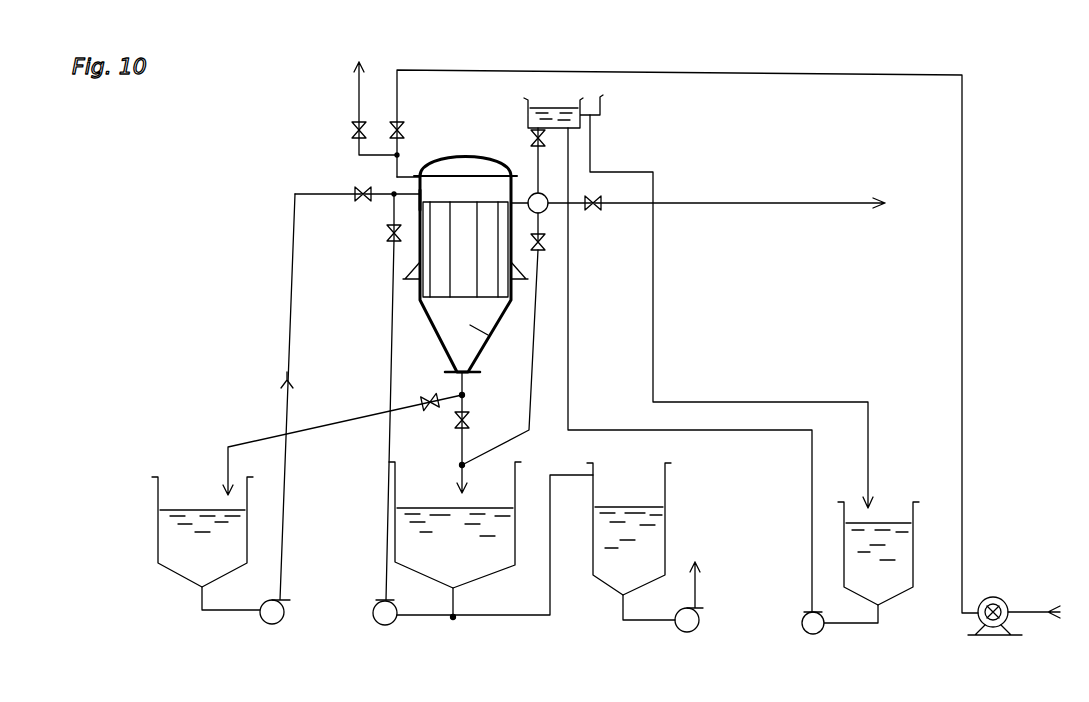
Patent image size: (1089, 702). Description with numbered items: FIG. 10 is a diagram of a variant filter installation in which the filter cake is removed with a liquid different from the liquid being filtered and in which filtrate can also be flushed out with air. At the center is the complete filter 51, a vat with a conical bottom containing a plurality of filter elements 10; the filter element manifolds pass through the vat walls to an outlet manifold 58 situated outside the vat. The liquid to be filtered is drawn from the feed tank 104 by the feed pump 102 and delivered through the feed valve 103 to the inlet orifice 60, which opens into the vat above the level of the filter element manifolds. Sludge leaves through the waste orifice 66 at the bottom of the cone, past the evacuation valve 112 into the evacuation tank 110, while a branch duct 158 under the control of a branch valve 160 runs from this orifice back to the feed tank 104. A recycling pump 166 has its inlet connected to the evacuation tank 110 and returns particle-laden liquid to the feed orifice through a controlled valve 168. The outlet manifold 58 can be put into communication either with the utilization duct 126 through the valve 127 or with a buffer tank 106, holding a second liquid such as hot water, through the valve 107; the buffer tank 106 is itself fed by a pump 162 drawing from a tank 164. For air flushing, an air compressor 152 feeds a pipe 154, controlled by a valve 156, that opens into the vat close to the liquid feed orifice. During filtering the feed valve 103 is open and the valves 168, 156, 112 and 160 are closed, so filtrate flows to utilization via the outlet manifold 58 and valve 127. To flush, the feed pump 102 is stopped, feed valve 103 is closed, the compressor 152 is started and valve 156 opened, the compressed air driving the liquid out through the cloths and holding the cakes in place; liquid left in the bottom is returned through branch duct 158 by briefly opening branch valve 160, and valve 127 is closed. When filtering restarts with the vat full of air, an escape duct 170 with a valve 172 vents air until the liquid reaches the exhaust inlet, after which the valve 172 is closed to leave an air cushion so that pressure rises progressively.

The filter element 10 is at (440, 288).
The complete filter 51 is at (470, 325).
The outlet manifold 58 is at (542, 196).
The inlet orifice 60 is at (420, 202).
The waste orifice 66 is at (452, 371).
The feed pump 102 is at (278, 624).
The feed valve 103 is at (360, 190).
The feed tank 104 is at (178, 538).
The buffer tank 106 is at (527, 104).
The valve 107 is at (530, 138).
The evacuation tank 110 is at (478, 568).
The evacuation valve 112 is at (474, 422).
The utilization duct 126 is at (714, 203).
The valve 127 is at (596, 212).
The air compressor 152 is at (1006, 598).
The pipe 154 is at (486, 70).
The valve 156 is at (405, 128).
The branch duct 158 is at (268, 436).
The branch valve 160 is at (434, 412).
The pump 162 is at (810, 634).
The tank 164 is at (892, 590).
The recycling pump 166 is at (384, 626).
The controlled valve 168 is at (392, 240).
The escape duct 170 is at (358, 78).
The valve 172 is at (356, 124).